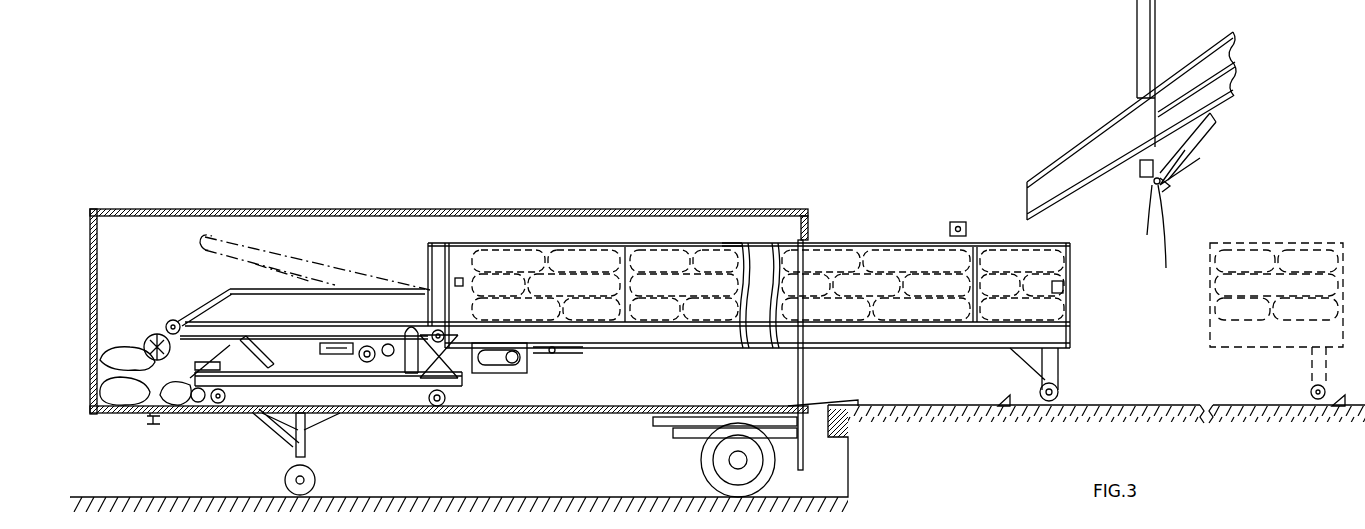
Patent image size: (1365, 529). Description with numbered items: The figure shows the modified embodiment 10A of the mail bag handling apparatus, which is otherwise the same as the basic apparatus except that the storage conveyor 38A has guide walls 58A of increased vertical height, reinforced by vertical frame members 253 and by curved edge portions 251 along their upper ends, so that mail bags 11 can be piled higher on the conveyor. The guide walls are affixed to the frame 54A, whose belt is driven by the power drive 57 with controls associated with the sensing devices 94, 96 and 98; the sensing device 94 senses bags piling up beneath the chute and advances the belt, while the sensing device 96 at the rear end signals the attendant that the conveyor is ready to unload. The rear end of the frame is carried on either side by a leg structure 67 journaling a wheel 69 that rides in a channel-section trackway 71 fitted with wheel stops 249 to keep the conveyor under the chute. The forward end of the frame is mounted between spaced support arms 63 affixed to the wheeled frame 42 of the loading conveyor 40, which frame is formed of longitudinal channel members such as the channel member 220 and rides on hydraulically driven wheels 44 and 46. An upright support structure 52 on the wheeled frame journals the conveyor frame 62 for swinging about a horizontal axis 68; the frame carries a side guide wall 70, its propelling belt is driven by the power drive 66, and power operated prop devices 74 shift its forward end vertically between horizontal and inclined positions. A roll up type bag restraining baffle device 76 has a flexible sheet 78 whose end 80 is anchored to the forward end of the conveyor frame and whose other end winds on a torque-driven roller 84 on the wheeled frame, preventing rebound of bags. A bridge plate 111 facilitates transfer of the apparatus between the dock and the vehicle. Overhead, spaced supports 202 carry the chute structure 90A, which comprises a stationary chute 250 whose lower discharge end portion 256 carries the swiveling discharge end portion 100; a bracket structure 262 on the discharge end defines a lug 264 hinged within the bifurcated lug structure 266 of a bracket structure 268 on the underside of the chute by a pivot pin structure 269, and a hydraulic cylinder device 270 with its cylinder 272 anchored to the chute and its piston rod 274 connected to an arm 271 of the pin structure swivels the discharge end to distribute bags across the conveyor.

The apparatus embodiment 10A is at (919, 209).
The mail bags 11 is at (776, 243).
The storage conveyor 38A is at (847, 229).
The mail bag loading conveyor 40 is at (368, 242).
The wheeled frame 42 is at (287, 402).
The hydraulically driven wheel 44 is at (210, 406).
The hydraulically driven wheel 46 is at (441, 406).
The upright support structure 52 is at (413, 362).
The storage conveyor frame 54A is at (627, 348).
The power drive 57 is at (531, 383).
The guide wall 58A is at (602, 243).
The conveyor frame 62 is at (282, 330).
The support arms 63 is at (456, 338).
The power drive 66 is at (378, 340).
The leg structure 67 is at (1067, 359).
The horizontal axis 68 is at (414, 326).
The wheel 69 is at (1062, 392).
The guide wall 70 is at (263, 298).
The trackway 71 is at (1170, 405).
The prop device 74 is at (265, 382).
The bag restraining baffle device 76 is at (150, 343).
The flexible sheet 78 is at (140, 412).
The sheet end 80 is at (172, 320).
The roller 84 is at (190, 408).
The chute structure 90A is at (1248, 85).
The sensing device 94 is at (964, 225).
The sensing device 96 is at (1068, 287).
The sensing device 98 is at (460, 270).
The chute discharge end portion 100 is at (1079, 163).
The bridge plate 111 is at (848, 407).
The support 202 is at (1157, 30).
The channel member 220 is at (308, 418).
The wheel stop 249 is at (1003, 401).
The stationary chute 250 is at (1240, 58).
The curved edge portion 251 is at (722, 243).
The vertical frame member 253 is at (636, 285).
The lower discharge end portion 256 is at (1238, 72).
The bracket structure 262 is at (1123, 184).
The lug 264 is at (1160, 176).
The bifurcated lug structure 266 is at (1200, 152).
The bracket structure 268 is at (1207, 132).
The pivot pin structure 269 is at (1140, 225).
The hydraulic cylinder device 270 is at (1228, 167).
The arm 271 is at (1163, 237).
The cylinder 272 is at (1197, 163).
The piston rod 274 is at (1165, 186).